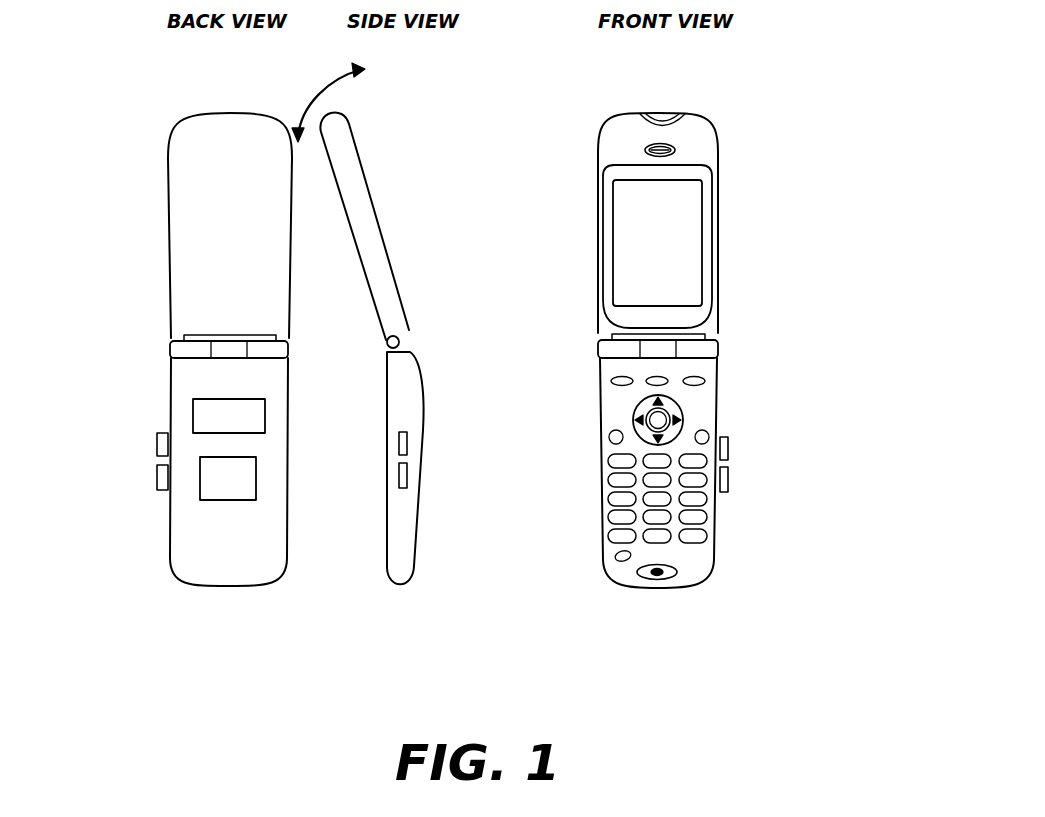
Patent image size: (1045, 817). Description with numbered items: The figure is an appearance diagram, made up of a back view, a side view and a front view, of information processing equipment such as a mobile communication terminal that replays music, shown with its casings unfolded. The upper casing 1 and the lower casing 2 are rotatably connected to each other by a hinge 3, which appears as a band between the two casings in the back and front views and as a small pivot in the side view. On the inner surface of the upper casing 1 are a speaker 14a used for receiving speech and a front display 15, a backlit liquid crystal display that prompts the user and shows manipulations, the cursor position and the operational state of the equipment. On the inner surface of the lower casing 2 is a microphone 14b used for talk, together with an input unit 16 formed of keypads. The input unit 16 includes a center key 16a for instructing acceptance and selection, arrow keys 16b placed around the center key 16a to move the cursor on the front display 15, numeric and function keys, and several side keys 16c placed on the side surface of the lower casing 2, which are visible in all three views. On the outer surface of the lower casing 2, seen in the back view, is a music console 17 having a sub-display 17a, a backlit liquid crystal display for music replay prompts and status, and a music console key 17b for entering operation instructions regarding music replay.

The upper casing 1 is at (293, 218).
The lower casing 2 is at (288, 428).
The hinge 3 is at (386, 347).
The speaker 14a is at (677, 148).
The microphone 14b is at (676, 575).
The front display 15 is at (694, 262).
The input unit 16 is at (715, 548).
The center key 16a is at (660, 420).
The arrow keys 16b is at (670, 403).
The side keys 16c is at (153, 428).
The music console 17 is at (268, 397).
The sub-display 17a is at (192, 405).
The music console key 17b is at (200, 488).